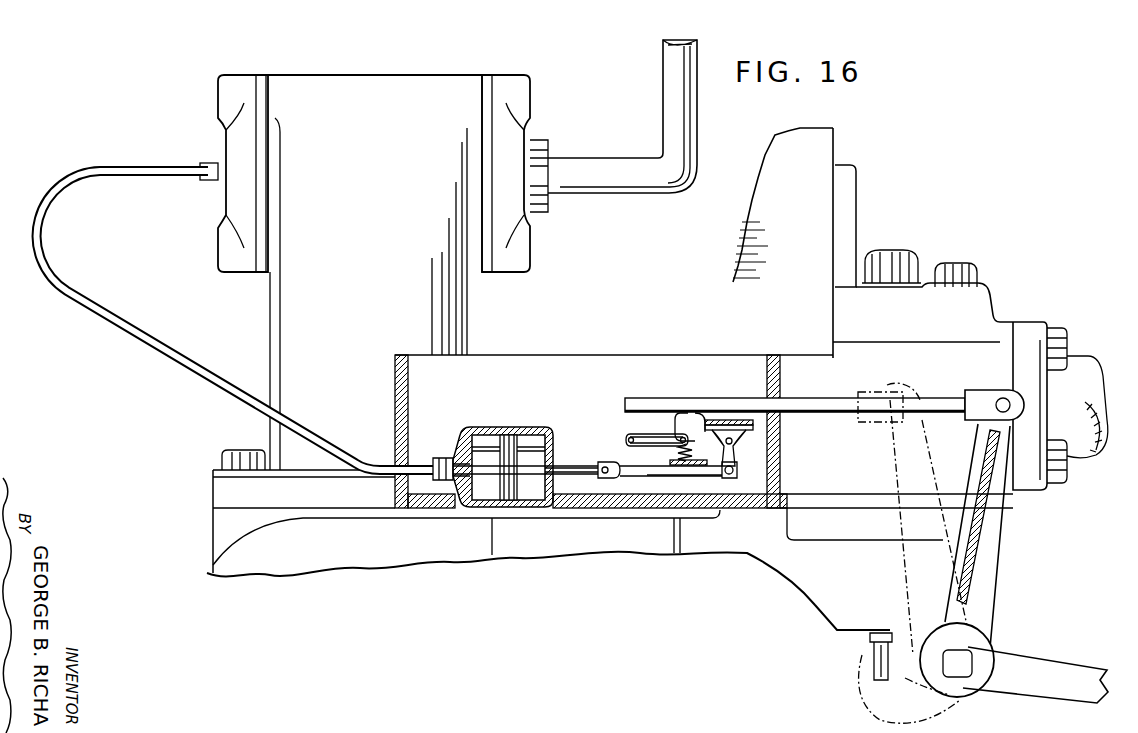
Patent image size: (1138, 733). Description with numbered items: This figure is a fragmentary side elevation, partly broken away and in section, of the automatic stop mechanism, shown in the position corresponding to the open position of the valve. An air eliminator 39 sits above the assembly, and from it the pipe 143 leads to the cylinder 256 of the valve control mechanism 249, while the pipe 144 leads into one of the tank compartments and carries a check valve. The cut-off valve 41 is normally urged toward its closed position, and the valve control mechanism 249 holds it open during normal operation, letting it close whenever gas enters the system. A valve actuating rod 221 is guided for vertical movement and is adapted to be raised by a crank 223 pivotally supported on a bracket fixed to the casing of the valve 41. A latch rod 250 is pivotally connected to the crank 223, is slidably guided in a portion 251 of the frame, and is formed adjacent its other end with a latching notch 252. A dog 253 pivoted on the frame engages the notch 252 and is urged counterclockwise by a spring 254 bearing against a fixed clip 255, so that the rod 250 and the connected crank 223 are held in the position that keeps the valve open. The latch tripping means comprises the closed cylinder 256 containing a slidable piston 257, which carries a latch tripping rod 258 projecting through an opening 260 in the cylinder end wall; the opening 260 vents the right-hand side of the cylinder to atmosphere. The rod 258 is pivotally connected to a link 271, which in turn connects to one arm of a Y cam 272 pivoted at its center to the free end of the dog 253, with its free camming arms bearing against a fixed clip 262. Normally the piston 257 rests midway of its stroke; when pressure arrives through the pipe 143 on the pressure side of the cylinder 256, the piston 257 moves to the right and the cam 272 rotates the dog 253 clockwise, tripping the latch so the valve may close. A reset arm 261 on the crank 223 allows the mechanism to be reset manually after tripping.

The air eliminator 39 is at (400, 92).
The pipe 144 is at (607, 194).
The cut-off valve 41 is at (968, 322).
The pipe 143 is at (312, 432).
The cylinder 256 is at (488, 428).
The piston 257 is at (509, 431).
The valve control mechanism 249 is at (591, 401).
The dog 253 is at (648, 440).
The latching notch 252 is at (686, 412).
The portion of the frame 251 is at (782, 381).
The latch rod 250 is at (833, 404).
The opening 260 is at (557, 465).
The spring 254 is at (678, 452).
The fixed clip 262 is at (750, 428).
The Y cam 272 is at (740, 456).
The fixed clip 255 is at (660, 474).
The latch tripping rod 258 is at (583, 476).
The link 271 is at (645, 478).
The crank 223 is at (988, 543).
The valve actuating rod 221 is at (870, 636).
The reset arm 261 is at (1053, 675).